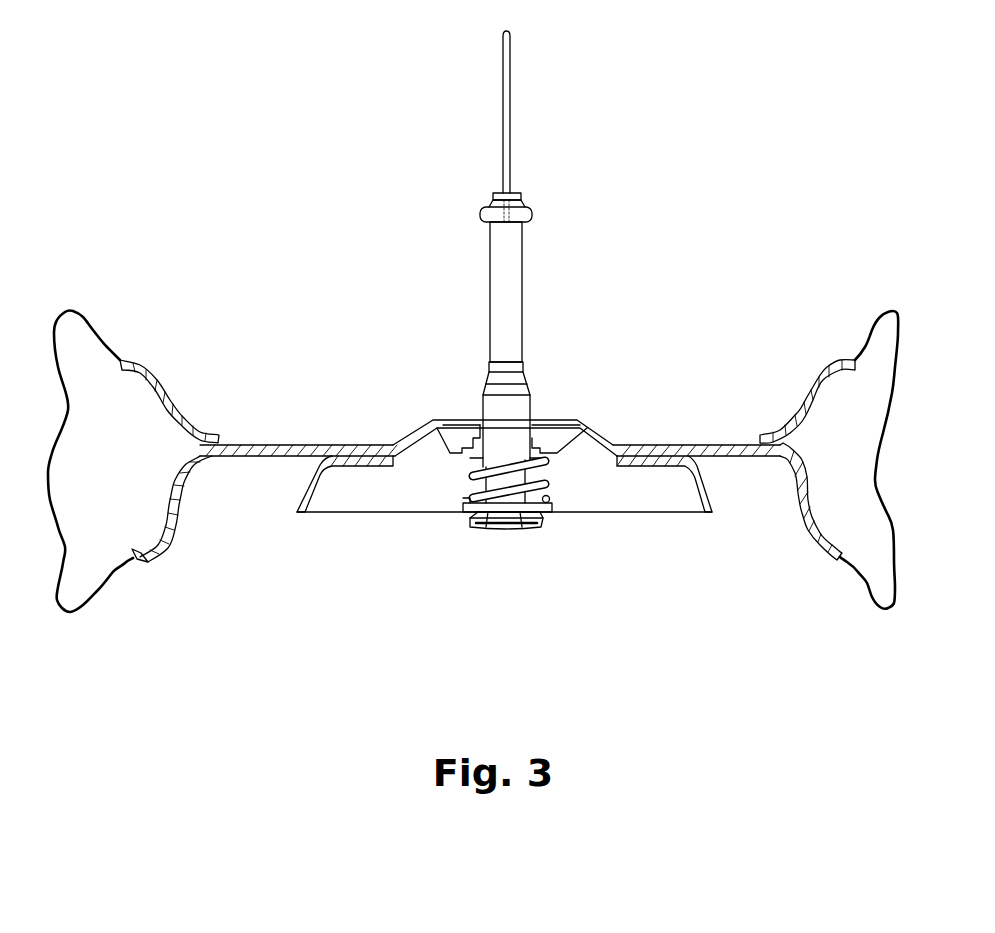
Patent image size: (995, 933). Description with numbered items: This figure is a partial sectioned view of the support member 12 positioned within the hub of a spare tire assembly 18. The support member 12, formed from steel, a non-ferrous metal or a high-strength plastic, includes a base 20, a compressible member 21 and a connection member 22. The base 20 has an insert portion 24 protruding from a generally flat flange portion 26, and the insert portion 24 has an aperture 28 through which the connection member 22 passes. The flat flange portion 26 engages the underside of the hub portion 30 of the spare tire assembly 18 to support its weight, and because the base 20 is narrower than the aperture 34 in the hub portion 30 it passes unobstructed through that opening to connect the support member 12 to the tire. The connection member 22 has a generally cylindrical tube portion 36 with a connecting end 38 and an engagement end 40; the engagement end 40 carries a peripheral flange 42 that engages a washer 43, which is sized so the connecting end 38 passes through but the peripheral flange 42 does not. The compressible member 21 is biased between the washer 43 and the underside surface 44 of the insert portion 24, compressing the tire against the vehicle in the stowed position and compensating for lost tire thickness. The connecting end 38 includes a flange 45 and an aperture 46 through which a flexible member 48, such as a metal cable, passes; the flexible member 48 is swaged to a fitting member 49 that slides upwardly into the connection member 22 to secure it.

The support member 12 is at (600, 278).
The spare tire assembly 18 is at (487, 424).
The base 20 is at (688, 512).
The compressible member 21 is at (492, 532).
The connection member 22 is at (499, 249).
The insert portion 24 is at (580, 422).
The flat flange portion 26 is at (352, 445).
The aperture 28 is at (533, 428).
The hub portion 30 is at (487, 448).
The aperture 34 is at (388, 443).
The cylindrical tube portion 36 is at (525, 333).
The connecting end 38 is at (522, 203).
The engagement end 40 is at (532, 525).
The peripheral flange 42 is at (537, 515).
The washer 43 is at (465, 505).
The underside surface 44 is at (550, 478).
The flange 45 is at (533, 220).
The aperture 46 is at (508, 195).
The flexible member 48 is at (508, 100).
The fitting member 49 is at (488, 527).